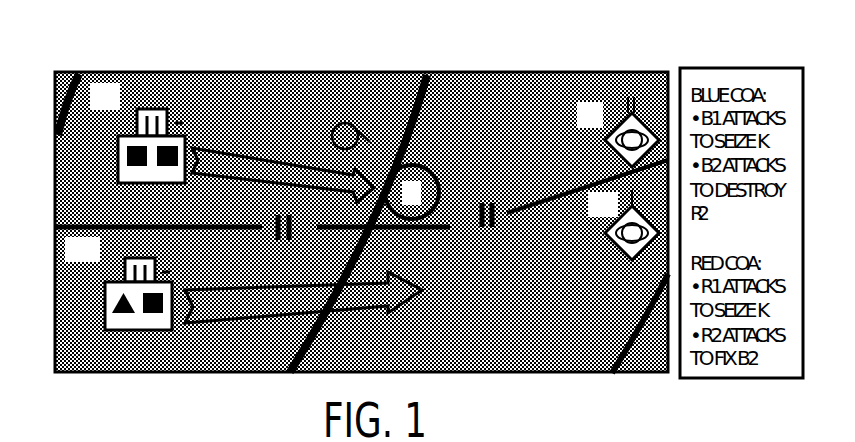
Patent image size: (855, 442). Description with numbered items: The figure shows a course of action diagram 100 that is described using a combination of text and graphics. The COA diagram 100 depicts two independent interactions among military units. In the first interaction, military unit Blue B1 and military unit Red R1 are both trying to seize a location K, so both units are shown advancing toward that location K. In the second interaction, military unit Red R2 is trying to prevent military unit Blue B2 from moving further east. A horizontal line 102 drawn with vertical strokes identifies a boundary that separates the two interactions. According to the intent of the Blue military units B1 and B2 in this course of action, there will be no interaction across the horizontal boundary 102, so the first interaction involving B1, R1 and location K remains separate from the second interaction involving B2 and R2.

The COA diagram 100 is at (90, 67).
The horizontal line 102 is at (73, 224).
The military unit Blue B1 is at (139, 135).
The military unit Blue B2 is at (120, 285).
The military unit Red R1 is at (619, 132).
The military unit Red R2 is at (625, 225).
The location K is at (412, 192).